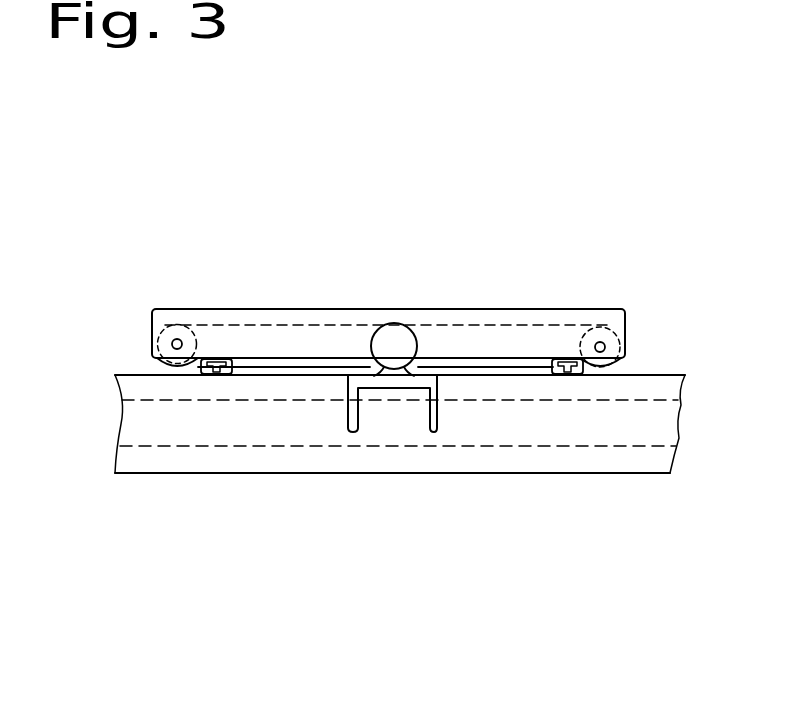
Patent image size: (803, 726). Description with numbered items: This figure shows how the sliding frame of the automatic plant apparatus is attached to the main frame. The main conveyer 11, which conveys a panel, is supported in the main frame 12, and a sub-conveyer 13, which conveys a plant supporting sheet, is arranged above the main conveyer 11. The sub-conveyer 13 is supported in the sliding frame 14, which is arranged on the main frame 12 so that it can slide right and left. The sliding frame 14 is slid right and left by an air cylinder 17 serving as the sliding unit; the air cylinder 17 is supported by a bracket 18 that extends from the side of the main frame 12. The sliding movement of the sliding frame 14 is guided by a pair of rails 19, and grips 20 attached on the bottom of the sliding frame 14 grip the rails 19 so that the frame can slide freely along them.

The main conveyer 11 is at (297, 445).
The main frame 12 is at (595, 473).
The sub-conveyer 13 is at (298, 317).
The sliding frame 14 is at (567, 310).
The air cylinder 17 is at (398, 320).
The bracket 18 is at (408, 388).
The rails 19 is at (217, 375).
The grips 20 is at (190, 374).